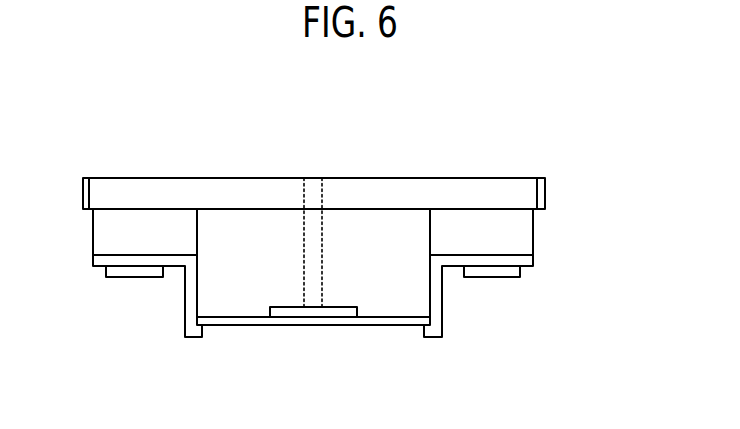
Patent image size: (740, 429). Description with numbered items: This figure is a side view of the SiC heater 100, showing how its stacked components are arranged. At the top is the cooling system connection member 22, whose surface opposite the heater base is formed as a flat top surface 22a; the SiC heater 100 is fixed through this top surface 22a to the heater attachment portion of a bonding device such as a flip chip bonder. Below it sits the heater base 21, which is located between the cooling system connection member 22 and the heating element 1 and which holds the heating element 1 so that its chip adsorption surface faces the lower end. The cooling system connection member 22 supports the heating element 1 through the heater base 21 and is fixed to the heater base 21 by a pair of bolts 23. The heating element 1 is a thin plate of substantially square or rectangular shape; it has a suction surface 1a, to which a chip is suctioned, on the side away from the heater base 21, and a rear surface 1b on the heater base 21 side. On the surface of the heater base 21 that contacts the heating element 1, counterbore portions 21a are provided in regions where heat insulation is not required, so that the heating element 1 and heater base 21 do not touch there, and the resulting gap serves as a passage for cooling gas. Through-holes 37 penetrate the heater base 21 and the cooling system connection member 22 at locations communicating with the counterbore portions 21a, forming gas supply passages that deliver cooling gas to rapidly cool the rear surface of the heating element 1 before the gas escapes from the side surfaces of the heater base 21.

The SiC heater 100 is at (427, 133).
The cooling system connection member 22 is at (503, 187).
The top surface 22a is at (152, 178).
The through-hole 37 is at (304, 200).
The heater base 21 is at (520, 237).
The counterbore portion 21a is at (317, 310).
The bolt 23 is at (133, 273).
The heating element 1 is at (383, 322).
The suction surface 1a is at (250, 326).
The rear surface 1b is at (220, 325).